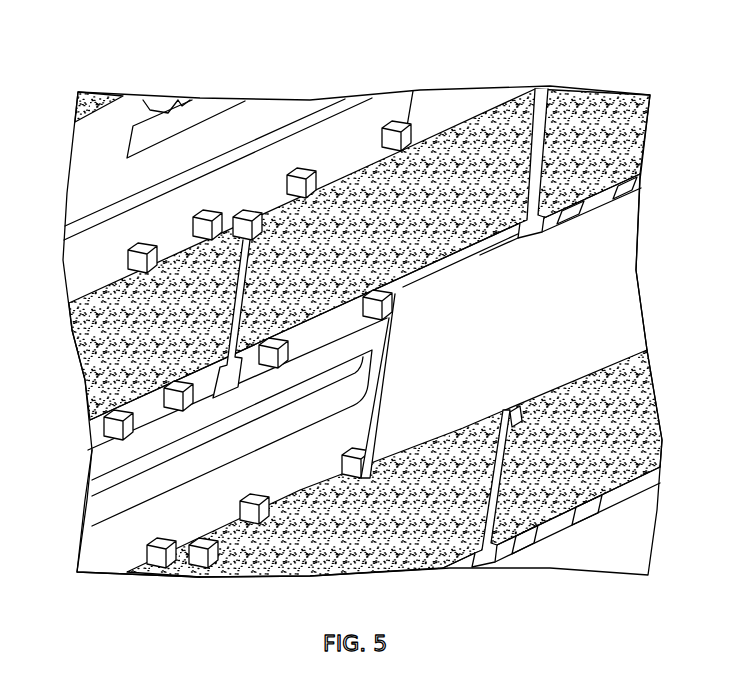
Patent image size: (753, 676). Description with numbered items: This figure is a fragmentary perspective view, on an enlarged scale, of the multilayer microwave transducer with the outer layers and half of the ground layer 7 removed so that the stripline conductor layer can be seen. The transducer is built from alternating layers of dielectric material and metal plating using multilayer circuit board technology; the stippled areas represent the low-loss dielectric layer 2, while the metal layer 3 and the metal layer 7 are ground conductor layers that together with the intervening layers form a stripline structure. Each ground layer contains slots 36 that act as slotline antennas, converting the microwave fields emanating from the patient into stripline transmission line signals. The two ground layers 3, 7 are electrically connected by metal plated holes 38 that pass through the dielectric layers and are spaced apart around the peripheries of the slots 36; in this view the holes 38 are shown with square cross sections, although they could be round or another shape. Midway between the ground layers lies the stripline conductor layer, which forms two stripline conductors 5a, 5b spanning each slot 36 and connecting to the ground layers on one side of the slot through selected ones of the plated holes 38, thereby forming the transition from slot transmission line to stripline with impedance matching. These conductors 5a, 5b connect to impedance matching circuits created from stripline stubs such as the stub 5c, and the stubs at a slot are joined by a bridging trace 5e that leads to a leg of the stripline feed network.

The dielectric layer 2 is at (447, 189).
The metal layer 3 is at (95, 557).
The stripline conductor 5a is at (237, 292).
The stripline conductor 5b is at (557, 118).
The stripline stub 5c is at (150, 128).
The bridging trace 5e is at (102, 213).
The metal layer 7 is at (627, 283).
The slot 36 is at (95, 382).
The plated hole 38 is at (193, 227).